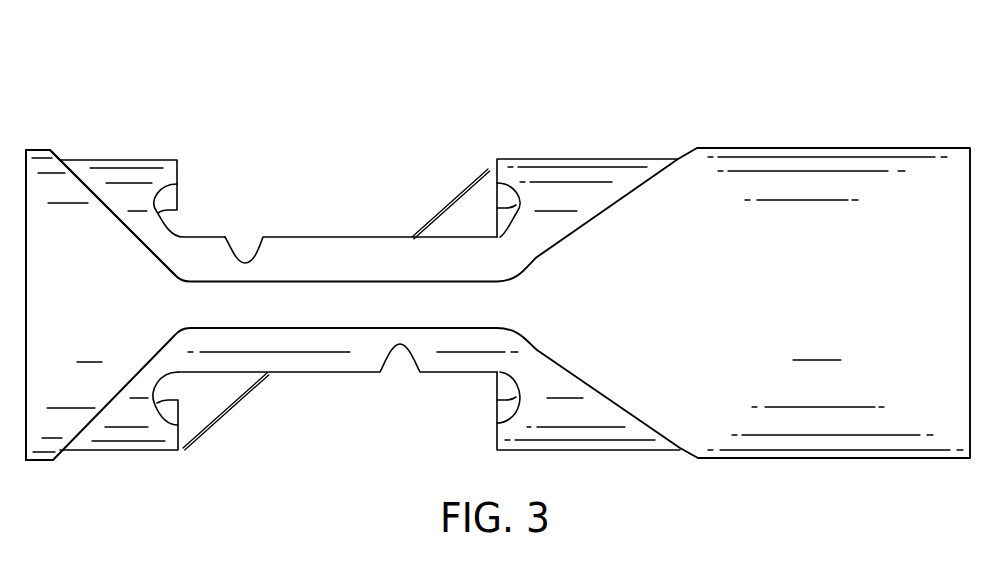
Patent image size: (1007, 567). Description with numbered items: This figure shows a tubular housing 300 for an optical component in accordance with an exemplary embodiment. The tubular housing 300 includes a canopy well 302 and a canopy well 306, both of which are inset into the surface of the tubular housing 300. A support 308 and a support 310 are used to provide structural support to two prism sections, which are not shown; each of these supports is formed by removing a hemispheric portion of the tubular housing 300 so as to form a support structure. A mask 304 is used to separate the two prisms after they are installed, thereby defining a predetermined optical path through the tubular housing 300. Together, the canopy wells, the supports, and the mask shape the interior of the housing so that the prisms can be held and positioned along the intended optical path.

The tubular housing 300 is at (586, 60).
The canopy well 302 is at (53, 151).
The mask 304 is at (450, 200).
The canopy well 306 is at (120, 458).
The support 308 is at (497, 437).
The support 310 is at (358, 236).